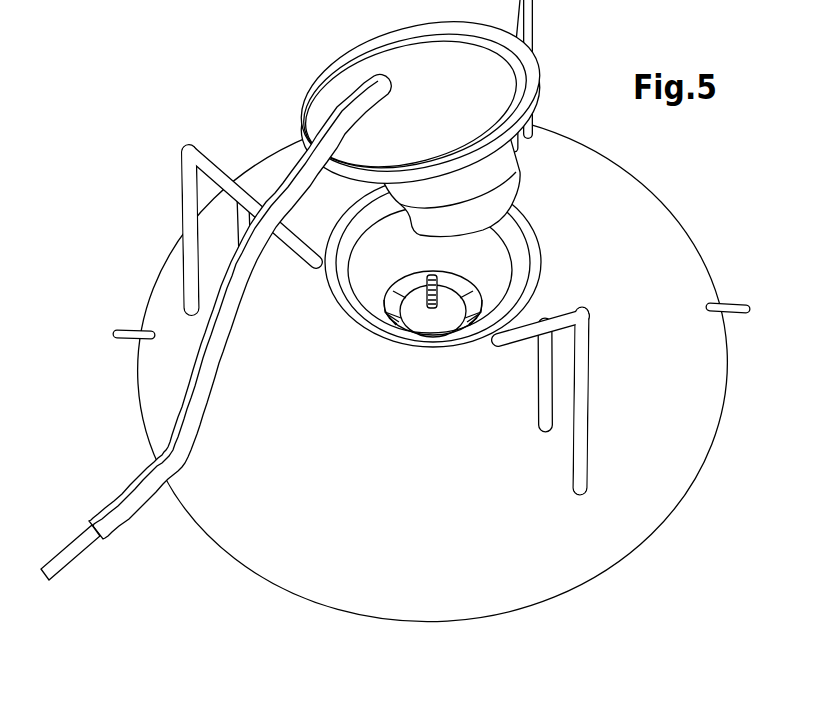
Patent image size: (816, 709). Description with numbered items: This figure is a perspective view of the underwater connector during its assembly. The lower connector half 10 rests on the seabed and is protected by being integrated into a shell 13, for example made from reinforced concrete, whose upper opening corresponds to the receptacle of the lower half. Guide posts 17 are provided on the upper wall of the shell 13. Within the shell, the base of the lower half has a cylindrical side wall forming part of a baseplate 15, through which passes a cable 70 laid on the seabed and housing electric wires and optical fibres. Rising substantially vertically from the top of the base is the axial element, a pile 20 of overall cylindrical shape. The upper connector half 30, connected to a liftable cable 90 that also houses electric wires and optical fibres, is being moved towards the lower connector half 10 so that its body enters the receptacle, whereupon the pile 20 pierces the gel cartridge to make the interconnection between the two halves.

The lower connector half 10 is at (590, 278).
The shell 13 is at (632, 315).
The baseplate 15 is at (437, 328).
The guide posts 17 is at (183, 178).
The pile 20 is at (433, 274).
The upper connector half 30 is at (322, 56).
The cable 70 is at (127, 330).
The liftable cable 90 is at (120, 514).